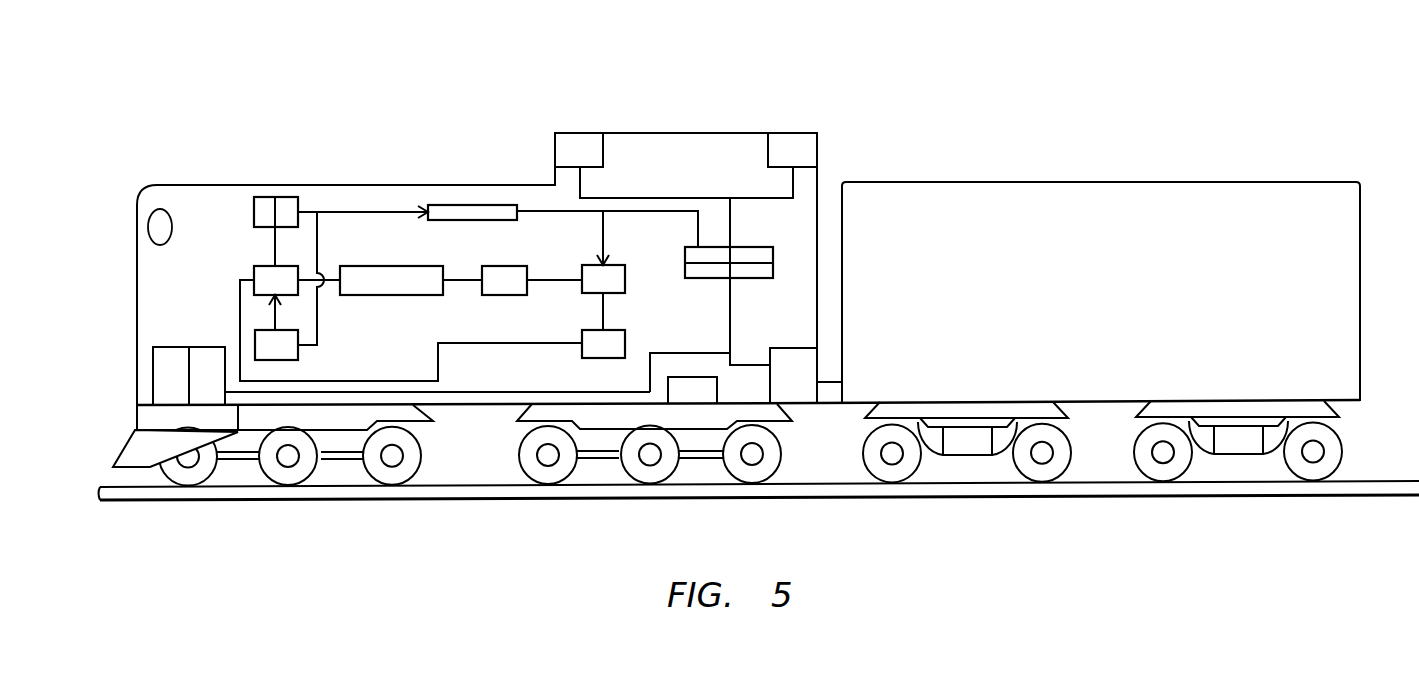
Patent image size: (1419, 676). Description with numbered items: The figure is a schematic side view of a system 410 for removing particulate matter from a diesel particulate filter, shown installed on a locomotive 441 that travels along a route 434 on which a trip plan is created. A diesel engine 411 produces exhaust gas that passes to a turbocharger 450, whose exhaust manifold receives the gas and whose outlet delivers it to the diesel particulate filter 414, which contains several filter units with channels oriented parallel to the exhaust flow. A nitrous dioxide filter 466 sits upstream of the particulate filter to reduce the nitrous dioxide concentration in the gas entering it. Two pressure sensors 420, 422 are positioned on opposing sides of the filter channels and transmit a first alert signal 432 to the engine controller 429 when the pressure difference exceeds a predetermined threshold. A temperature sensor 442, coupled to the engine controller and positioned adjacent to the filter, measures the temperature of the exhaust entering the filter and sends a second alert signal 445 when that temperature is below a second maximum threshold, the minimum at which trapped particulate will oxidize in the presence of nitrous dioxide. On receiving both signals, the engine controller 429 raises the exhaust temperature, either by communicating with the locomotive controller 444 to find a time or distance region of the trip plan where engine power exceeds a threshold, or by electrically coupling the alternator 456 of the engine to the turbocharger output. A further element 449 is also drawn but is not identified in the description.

The system 410 is at (857, 63).
The diesel engine 411 is at (625, 293).
The diesel particulate filter 414 is at (267, 265).
The pressure sensor 420 is at (254, 212).
The pressure sensor 422 is at (287, 198).
The engine controller 429 is at (480, 205).
The first alert signal 432 is at (403, 210).
The route 434 is at (250, 500).
The locomotive 441 is at (327, 185).
The temperature sensor 442 is at (298, 357).
The locomotive controller 444 is at (774, 256).
The second alert signal 445 is at (317, 310).
The power line 449 is at (568, 213).
The turbocharger 450 is at (517, 295).
The alternator 456 is at (582, 358).
The nitrous dioxide filter 466 is at (415, 265).